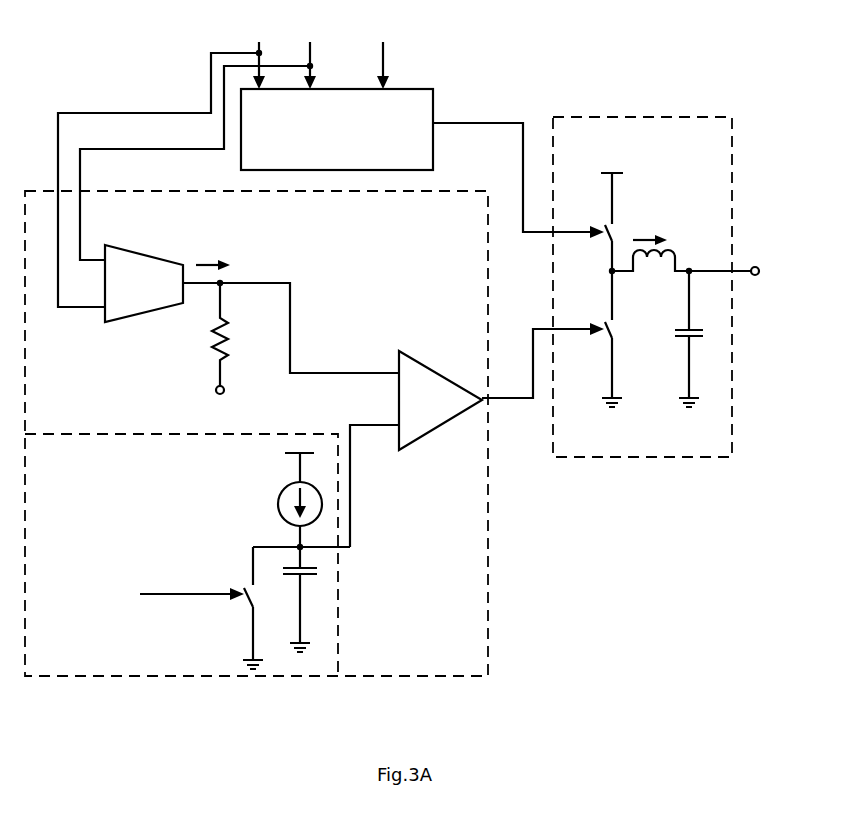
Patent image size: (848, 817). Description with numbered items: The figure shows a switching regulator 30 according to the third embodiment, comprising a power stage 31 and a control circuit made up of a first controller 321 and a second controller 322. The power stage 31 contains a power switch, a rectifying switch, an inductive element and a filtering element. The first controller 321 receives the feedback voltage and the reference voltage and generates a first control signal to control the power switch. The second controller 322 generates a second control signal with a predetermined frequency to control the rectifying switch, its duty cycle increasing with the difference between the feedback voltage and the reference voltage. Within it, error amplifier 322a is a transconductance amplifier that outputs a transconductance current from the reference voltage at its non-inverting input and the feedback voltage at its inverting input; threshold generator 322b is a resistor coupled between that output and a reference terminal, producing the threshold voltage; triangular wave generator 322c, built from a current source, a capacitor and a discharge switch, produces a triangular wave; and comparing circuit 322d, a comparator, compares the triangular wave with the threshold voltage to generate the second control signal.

The switching regulator 30 is at (413, 345).
The power stage 31 is at (673, 117).
The first controller 321 is at (337, 129).
The second controller 322 is at (490, 503).
The error amplifier 322a is at (120, 323).
The threshold generator 322b is at (238, 325).
The triangular wave generator 322c is at (340, 603).
The comparing circuit 322d is at (405, 350).